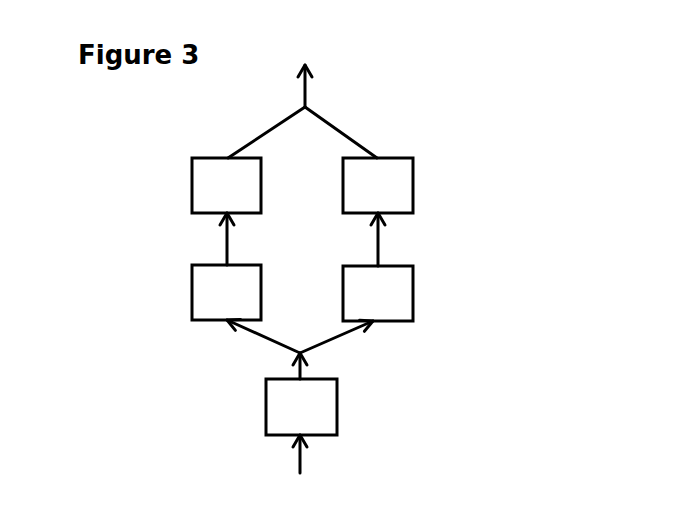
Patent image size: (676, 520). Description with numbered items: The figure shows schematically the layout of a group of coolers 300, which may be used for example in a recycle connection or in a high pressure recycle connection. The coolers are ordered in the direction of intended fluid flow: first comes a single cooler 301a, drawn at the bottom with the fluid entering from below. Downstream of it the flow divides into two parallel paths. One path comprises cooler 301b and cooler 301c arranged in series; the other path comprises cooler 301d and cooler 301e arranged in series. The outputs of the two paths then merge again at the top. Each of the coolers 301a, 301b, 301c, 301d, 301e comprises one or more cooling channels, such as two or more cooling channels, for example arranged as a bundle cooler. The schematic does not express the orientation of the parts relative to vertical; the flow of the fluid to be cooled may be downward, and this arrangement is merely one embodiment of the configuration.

The group of coolers 300 is at (474, 67).
The cooler 301a is at (337, 408).
The cooler 301b is at (413, 290).
The cooler 301c is at (413, 182).
The cooler 301d is at (192, 291).
The cooler 301e is at (192, 185).